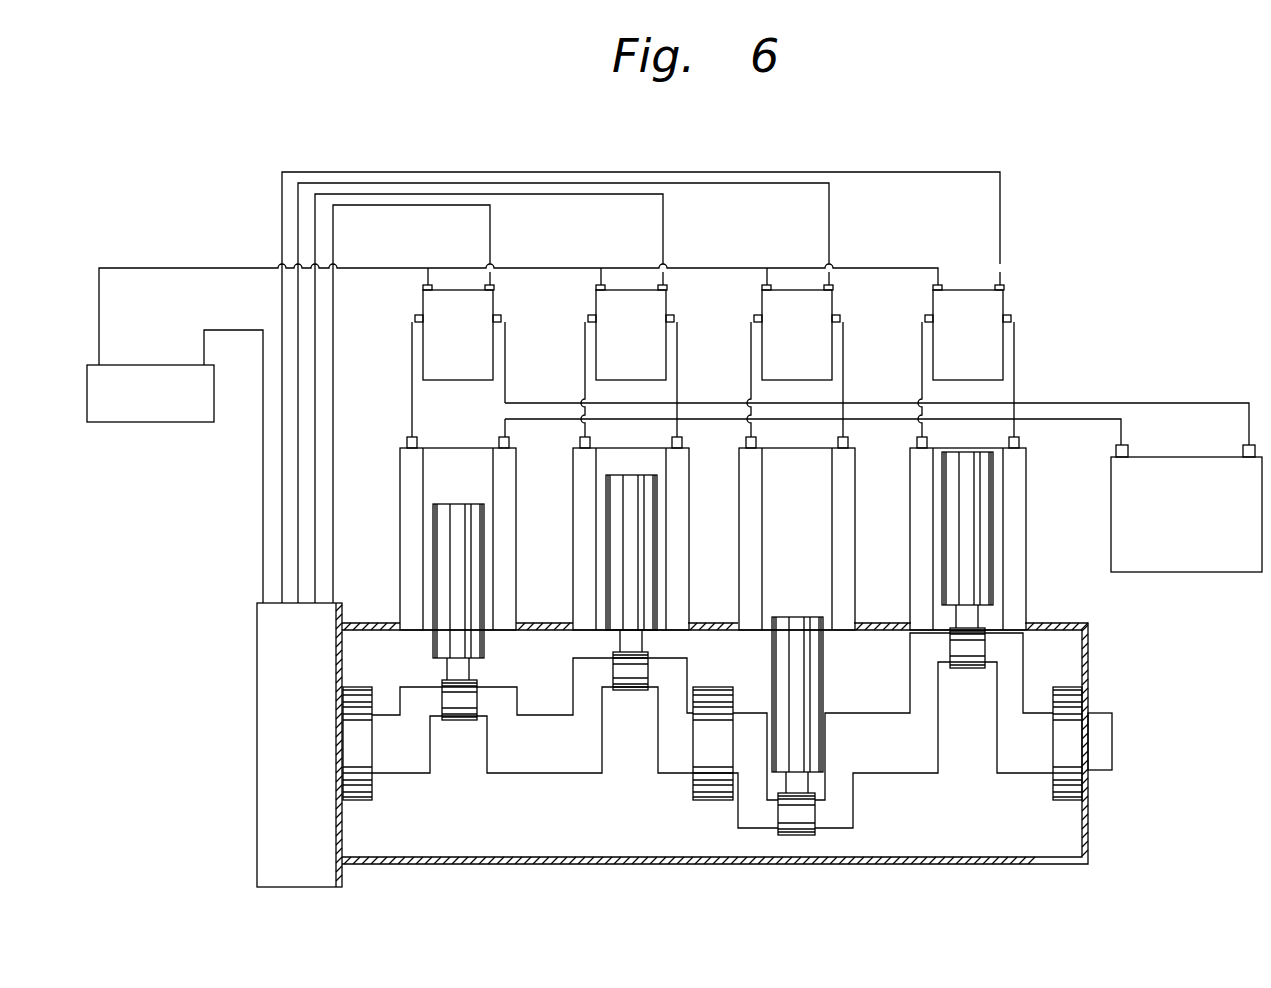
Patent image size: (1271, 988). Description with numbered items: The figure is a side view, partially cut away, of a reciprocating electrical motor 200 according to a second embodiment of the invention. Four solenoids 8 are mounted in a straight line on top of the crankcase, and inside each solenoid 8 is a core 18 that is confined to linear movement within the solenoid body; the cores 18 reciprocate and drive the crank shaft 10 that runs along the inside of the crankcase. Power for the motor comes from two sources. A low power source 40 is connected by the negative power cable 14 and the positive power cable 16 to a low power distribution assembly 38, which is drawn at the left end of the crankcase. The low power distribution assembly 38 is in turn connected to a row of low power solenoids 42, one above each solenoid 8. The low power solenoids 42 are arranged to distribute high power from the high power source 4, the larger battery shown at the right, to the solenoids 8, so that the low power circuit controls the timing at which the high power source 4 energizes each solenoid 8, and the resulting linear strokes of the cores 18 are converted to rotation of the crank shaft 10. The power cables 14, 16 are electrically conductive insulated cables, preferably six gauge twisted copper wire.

The power source 4 is at (1198, 556).
The solenoids 8 is at (413, 488).
The crank shaft 10 is at (540, 753).
The negative power cable 14 is at (208, 268).
The positive power cable 16 is at (242, 330).
The core 18 is at (460, 563).
The low power distribution assembly 38 is at (270, 738).
The low power source 40 is at (151, 405).
The low power solenoids 42 is at (430, 305).
The reciprocating electrical motor 200 is at (722, 864).